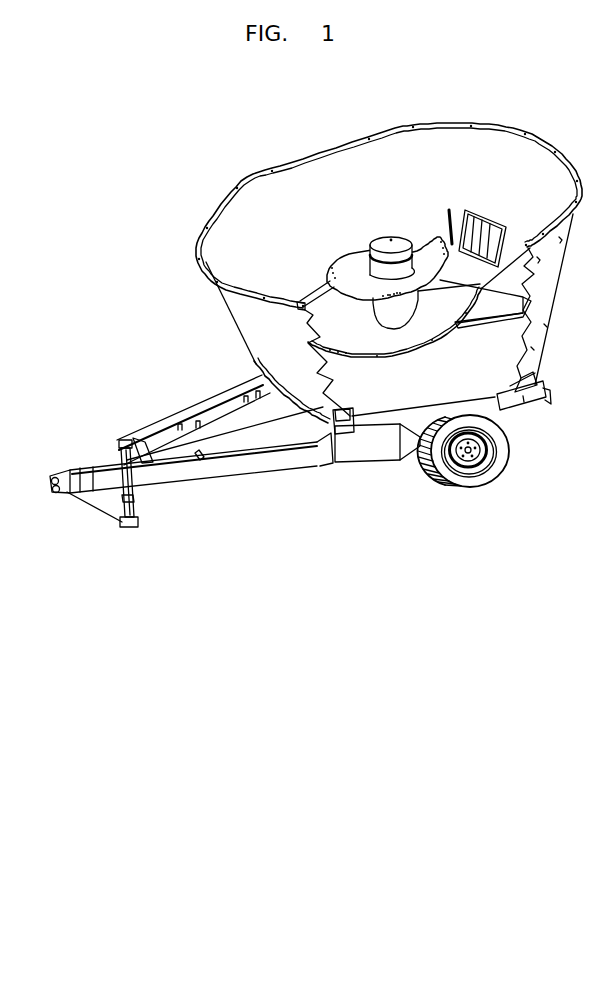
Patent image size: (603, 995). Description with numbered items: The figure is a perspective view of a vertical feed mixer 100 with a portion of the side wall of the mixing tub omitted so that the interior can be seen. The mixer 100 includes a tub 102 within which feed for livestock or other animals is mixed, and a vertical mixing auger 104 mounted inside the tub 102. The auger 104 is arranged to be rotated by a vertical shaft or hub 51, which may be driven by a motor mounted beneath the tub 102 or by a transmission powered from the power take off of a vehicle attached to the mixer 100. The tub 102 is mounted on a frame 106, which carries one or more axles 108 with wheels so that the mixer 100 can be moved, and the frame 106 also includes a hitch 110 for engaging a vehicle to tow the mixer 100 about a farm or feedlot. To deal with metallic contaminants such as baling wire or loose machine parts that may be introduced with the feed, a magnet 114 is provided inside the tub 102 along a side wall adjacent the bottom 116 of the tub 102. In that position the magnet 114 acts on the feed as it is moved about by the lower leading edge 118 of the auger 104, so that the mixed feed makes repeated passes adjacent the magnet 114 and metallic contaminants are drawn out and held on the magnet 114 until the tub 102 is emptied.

The vertical feed mixer 100 is at (233, 167).
The tub 102 is at (434, 152).
The vertical mixing auger 104 is at (353, 260).
The vertical shaft or hub 51 is at (399, 238).
The magnet 114 is at (487, 213).
The bottom of tub 116 is at (348, 363).
The lower leading edge of auger 118 is at (507, 320).
The frame 106 is at (162, 428).
The axle 108 is at (430, 470).
The hitch 110 is at (138, 523).